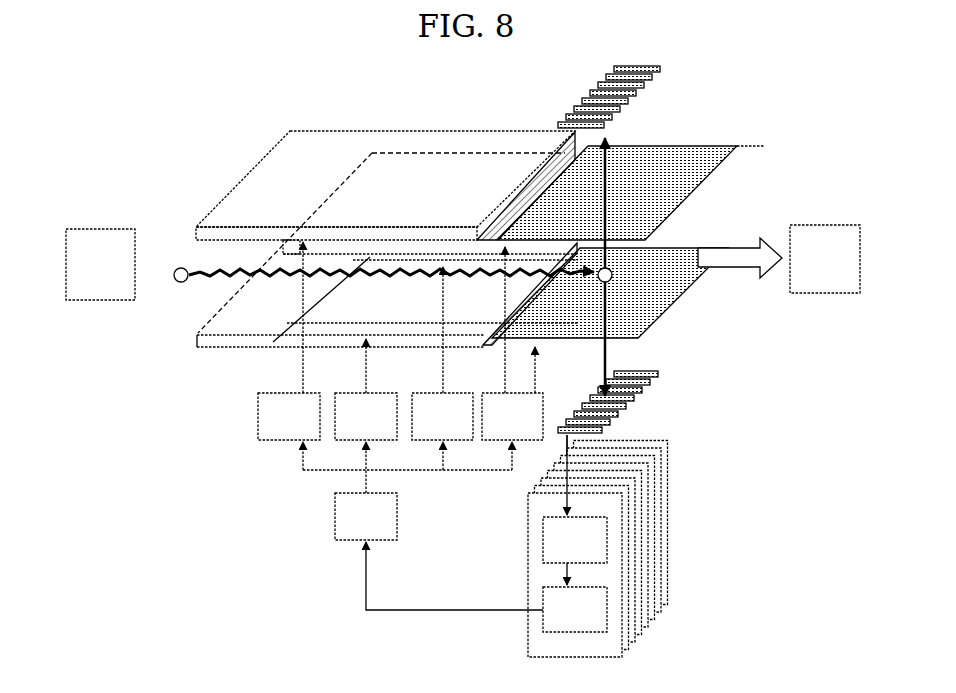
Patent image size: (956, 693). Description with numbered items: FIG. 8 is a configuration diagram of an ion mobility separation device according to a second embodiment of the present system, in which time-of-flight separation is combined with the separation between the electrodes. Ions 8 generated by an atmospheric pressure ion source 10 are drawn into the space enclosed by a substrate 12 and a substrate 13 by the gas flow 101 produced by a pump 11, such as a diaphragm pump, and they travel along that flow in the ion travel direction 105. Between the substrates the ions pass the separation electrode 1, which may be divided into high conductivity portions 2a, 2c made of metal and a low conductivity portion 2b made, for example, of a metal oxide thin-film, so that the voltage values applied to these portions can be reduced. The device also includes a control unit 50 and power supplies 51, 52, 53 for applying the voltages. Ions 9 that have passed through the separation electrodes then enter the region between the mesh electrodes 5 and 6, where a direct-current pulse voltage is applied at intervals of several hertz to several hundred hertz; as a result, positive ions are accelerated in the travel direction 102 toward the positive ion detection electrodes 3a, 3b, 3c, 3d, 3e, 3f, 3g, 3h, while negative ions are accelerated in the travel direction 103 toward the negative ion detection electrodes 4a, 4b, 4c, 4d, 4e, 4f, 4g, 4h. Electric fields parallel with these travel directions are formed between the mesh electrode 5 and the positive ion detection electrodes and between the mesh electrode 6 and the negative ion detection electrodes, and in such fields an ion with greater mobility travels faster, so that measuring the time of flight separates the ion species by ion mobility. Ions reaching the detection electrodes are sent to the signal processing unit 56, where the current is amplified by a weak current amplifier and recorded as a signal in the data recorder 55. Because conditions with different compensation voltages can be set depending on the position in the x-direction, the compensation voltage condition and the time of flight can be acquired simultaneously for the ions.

The separation electrode 1 is at (381, 243).
The high conductivity portion 2a is at (297, 335).
The low conductivity portion 2b is at (367, 302).
The high conductivity portion 2c is at (332, 261).
The positive ion detection electrode 3a is at (602, 430).
The positive ion detection electrode 3b is at (610, 422).
The positive ion detection electrode 3c is at (618, 414).
The positive ion detection electrode 3d is at (626, 406).
The positive ion detection electrode 3e is at (634, 398).
The positive ion detection electrode 3f is at (642, 390).
The positive ion detection electrode 3g is at (650, 382).
The positive ion detection electrode 3h is at (658, 374).
The negative ion detection electrode 4a is at (604, 125).
The negative ion detection electrode 4b is at (612, 117).
The negative ion detection electrode 4c is at (620, 109).
The negative ion detection electrode 4d is at (628, 101).
The negative ion detection electrode 4e is at (636, 93).
The negative ion detection electrode 4f is at (644, 85).
The negative ion detection electrode 4g is at (652, 77).
The negative ion detection electrode 4h is at (660, 69).
The mesh electrode 5 is at (672, 322).
The mesh electrode 6 is at (700, 176).
The ions 8 is at (173, 280).
The ions 9 is at (620, 270).
The atmospheric pressure ion source 10 is at (100, 264).
The pump 11 is at (825, 259).
The substrate 12 is at (307, 153).
The substrate 13 is at (198, 339).
The control unit 50 is at (407, 491).
The power supply 51 is at (289, 341).
The power supply 52 is at (366, 389).
The power supply 53 is at (442, 353).
The data recorder 55 is at (486, 587).
The signal processing unit 56 is at (622, 605).
The gas flow direction 101 is at (718, 244).
The ion travel direction 102 is at (610, 353).
The ion travel direction 103 is at (777, 140).
The ion travel direction 105 is at (217, 266).